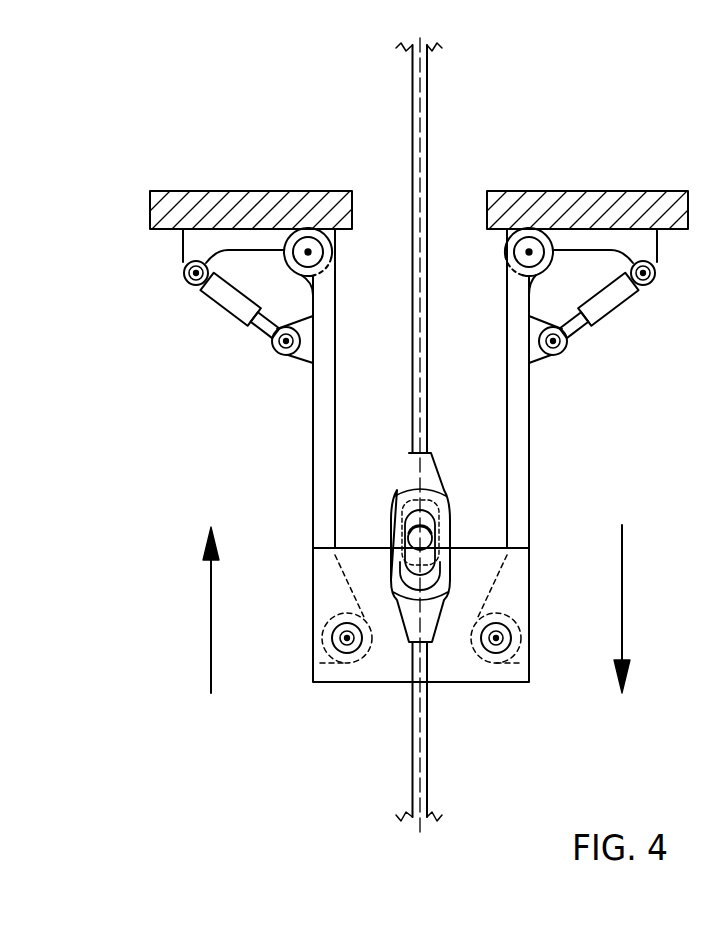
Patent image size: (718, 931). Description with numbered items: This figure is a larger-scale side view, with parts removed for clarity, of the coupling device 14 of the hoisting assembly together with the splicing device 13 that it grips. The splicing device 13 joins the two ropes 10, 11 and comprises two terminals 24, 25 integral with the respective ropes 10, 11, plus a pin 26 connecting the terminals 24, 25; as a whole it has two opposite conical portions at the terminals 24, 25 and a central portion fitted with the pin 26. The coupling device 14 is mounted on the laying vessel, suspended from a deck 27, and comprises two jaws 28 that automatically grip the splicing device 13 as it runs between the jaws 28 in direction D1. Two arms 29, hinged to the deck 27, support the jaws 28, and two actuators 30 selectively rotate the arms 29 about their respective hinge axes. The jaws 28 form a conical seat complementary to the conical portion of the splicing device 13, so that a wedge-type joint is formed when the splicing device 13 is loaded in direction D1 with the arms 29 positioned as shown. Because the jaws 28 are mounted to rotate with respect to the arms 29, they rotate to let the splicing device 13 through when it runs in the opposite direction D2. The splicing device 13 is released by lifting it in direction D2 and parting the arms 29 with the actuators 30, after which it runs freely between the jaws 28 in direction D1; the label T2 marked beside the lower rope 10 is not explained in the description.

The rope 10 is at (422, 778).
The rope 11 is at (420, 87).
The splicing device 13 is at (473, 487).
The coupling device 14 is at (243, 492).
The terminal 24 is at (433, 612).
The terminal 25 is at (428, 467).
The pin 26 is at (432, 537).
The deck 27 is at (637, 200).
The jaws 28 is at (382, 663).
The arms 29 is at (317, 430).
The actuators 30 is at (232, 302).
The direction D1 is at (623, 608).
The direction D2 is at (211, 641).
The tension T2 is at (447, 800).